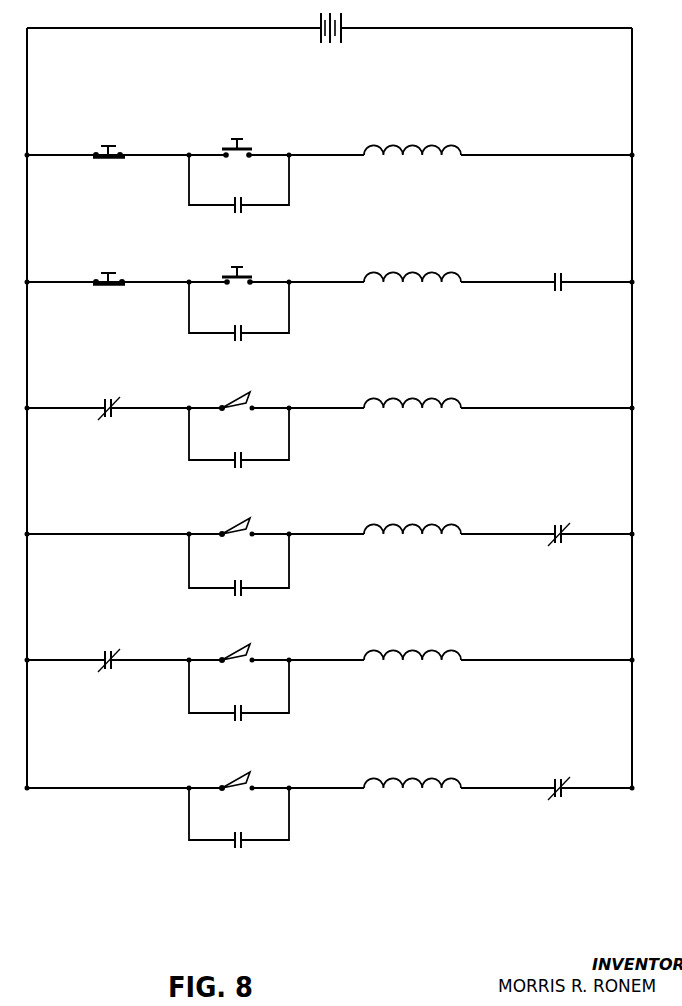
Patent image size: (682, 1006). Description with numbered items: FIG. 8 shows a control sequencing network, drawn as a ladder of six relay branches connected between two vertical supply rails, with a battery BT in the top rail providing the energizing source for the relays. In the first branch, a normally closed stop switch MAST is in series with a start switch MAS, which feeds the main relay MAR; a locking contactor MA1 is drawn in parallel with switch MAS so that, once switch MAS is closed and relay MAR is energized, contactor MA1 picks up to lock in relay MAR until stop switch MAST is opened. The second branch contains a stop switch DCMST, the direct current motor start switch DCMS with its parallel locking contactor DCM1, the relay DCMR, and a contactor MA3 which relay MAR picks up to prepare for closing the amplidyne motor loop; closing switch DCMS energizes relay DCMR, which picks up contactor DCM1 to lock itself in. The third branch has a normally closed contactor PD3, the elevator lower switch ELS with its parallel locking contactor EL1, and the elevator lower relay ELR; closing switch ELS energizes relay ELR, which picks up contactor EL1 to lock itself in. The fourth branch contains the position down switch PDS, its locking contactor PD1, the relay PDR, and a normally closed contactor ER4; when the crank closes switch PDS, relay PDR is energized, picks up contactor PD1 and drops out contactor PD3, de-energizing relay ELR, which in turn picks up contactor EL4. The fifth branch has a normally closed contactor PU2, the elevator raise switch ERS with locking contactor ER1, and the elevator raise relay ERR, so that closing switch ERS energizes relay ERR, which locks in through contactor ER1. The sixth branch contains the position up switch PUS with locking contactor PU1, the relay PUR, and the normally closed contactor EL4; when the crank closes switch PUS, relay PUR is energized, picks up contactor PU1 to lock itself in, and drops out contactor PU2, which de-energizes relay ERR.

The battery BT is at (335, 46).
The stop switch MAST is at (114, 127).
The start switch MAS is at (237, 138).
The main relay MAR is at (404, 142).
The contactor MA1 is at (244, 209).
The direct current motor stop switch DCMST is at (112, 260).
The direct current motor start switch DCMS is at (225, 272).
The direct current motor relay DCMR is at (410, 260).
The contactor MA3 is at (558, 271).
The contactor DCM1 is at (240, 341).
The contactor PD3 is at (119, 388).
The elevator lower switch ELS is at (231, 399).
The elevator lower relay ELR is at (409, 399).
The contactor EL1 is at (244, 463).
The position down switch PDS is at (231, 524).
The position down relay PDR is at (413, 524).
The contactor ER4 is at (576, 514).
The contactor PD1 is at (244, 591).
The contactor PU2 is at (108, 651).
The elevator raise switch ERS is at (233, 651).
The elevator raise relay ERR is at (413, 651).
The contactor ER1 is at (244, 716).
The position up switch PUS is at (229, 777).
The position up relay PUR is at (413, 777).
The contactor EL4 is at (558, 778).
The contactor PU1 is at (244, 843).